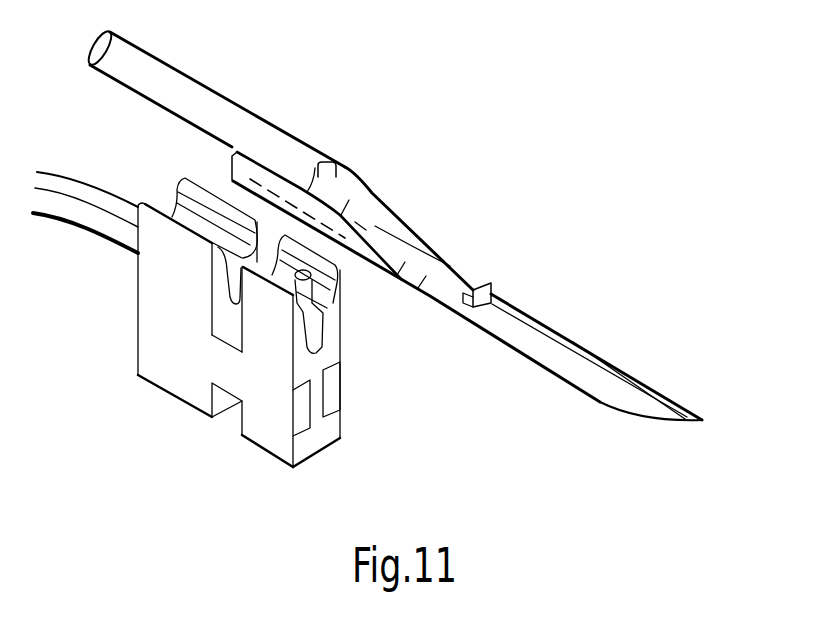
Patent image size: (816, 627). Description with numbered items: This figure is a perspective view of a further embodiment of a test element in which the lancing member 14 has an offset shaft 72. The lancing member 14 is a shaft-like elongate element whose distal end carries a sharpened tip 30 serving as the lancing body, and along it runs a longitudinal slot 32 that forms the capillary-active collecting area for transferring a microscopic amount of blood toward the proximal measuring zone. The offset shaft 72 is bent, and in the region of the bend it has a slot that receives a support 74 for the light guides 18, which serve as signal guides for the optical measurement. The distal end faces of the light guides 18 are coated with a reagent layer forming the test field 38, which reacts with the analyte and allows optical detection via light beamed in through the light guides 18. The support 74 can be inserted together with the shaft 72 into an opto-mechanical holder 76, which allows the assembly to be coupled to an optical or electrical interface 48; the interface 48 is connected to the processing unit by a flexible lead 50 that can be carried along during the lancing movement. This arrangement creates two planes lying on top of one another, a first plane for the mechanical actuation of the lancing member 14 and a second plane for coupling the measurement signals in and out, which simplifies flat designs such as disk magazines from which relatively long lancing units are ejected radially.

The lancing member 14 is at (585, 395).
The light guide 18 is at (240, 173).
The tip 30 is at (703, 420).
The slot 32 is at (573, 340).
The test field 38 is at (493, 287).
The interface 48 is at (128, 250).
The flexible lead 50 is at (80, 232).
The offset shaft 72 is at (351, 174).
The support 74 is at (368, 257).
The opto-mechanical holder 76 is at (190, 400).